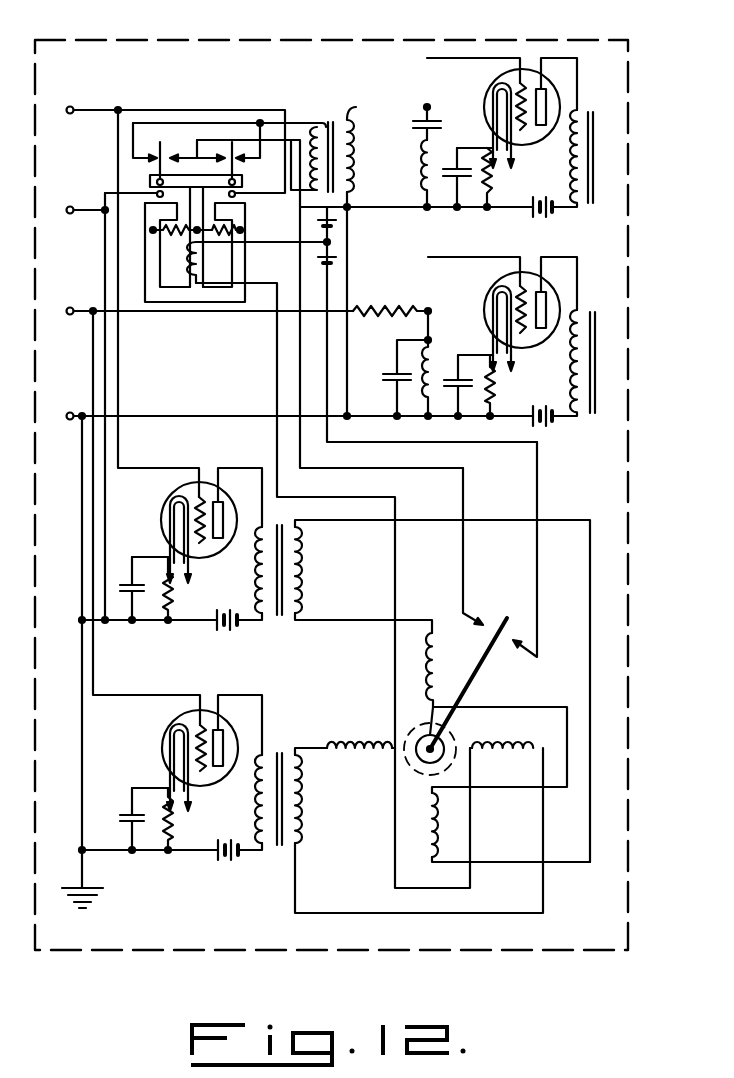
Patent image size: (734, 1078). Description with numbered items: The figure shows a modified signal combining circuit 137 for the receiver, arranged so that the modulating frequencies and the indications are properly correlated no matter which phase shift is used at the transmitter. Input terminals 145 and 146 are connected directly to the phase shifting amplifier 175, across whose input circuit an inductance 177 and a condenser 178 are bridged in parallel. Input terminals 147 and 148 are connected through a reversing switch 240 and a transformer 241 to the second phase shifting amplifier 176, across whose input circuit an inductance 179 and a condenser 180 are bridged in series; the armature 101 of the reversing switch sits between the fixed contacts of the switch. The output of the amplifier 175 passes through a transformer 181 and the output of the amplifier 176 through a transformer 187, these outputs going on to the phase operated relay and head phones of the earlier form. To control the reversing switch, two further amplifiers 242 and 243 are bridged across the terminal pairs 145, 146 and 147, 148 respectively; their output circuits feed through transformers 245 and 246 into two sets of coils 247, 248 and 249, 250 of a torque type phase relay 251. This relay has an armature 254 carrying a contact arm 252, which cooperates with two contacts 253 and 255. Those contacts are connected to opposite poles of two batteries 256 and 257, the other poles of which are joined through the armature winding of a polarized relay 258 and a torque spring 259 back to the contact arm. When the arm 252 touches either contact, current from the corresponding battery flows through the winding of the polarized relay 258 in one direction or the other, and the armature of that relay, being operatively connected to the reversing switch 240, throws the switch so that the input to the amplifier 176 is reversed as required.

The signal combining circuit 137 is at (163, 943).
The input terminal 148 is at (66, 108).
The input terminal 147 is at (66, 212).
The input terminal 146 is at (66, 309).
The input terminal 145 is at (66, 418).
The reversing switch 240 is at (229, 211).
The relay armature 101 is at (244, 173).
The polarized relay 258 is at (238, 262).
The transformer 241 is at (324, 100).
The battery 256 is at (340, 224).
The battery 257 is at (340, 260).
The phase shifting amplifier 176 is at (478, 89).
The condenser 180 is at (420, 128).
The inductance 179 is at (420, 170).
The transformer 187 is at (586, 118).
The phase shifting amplifier 175 is at (475, 289).
The inductance 177 is at (430, 370).
The condenser 178 is at (386, 378).
The transformer 181 is at (586, 320).
The amplifier 243 is at (153, 504).
The transformer 246 is at (266, 618).
The amplifier 242 is at (142, 736).
The transformer 245 is at (266, 846).
The coil 247 is at (328, 746).
The coil 248 is at (487, 751).
The coil 249 is at (440, 668).
The coil 250 is at (426, 847).
The torque type phase relay 251 is at (503, 732).
The contact arm 252 is at (480, 672).
The contact 253 is at (497, 607).
The contact 255 is at (511, 648).
The armature 254 is at (410, 738).
The torque spring 259 is at (415, 760).